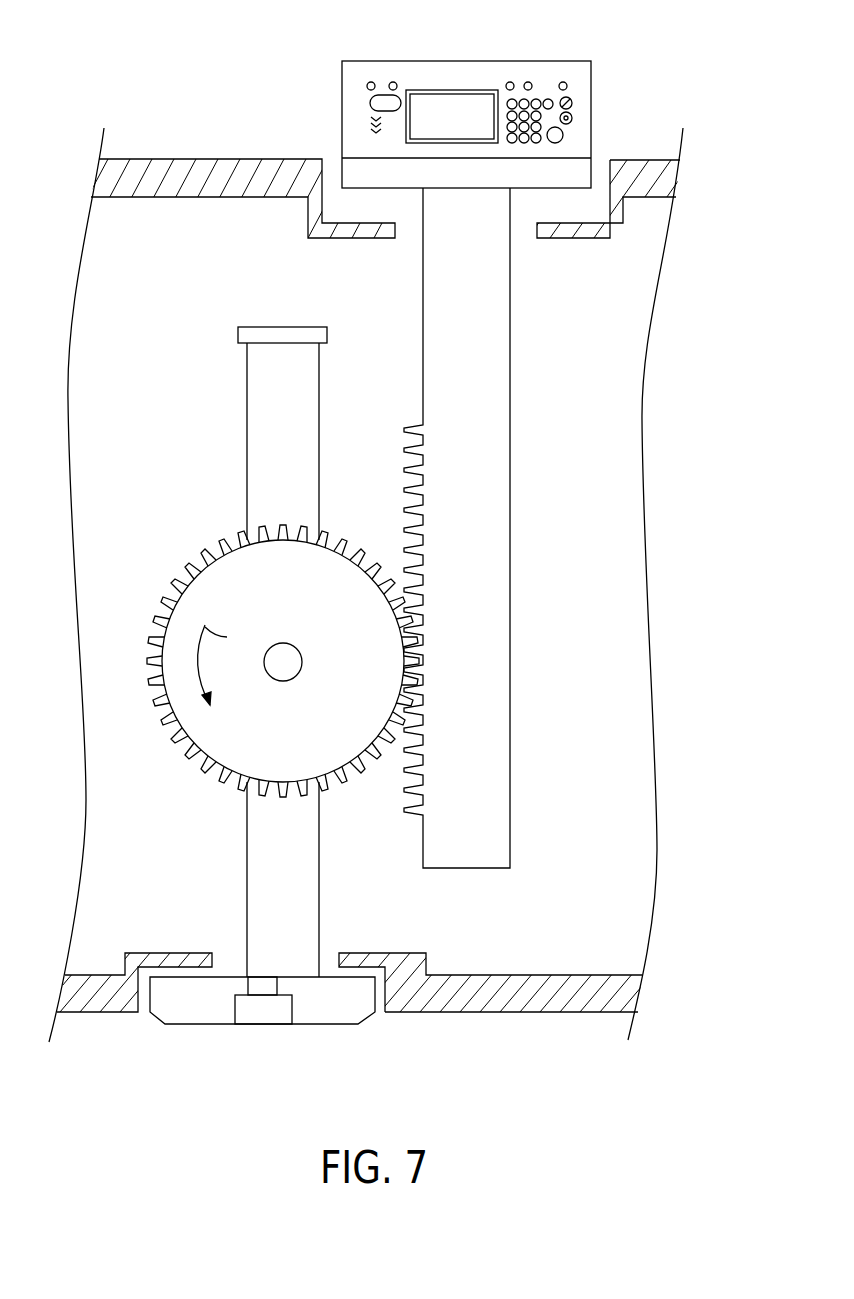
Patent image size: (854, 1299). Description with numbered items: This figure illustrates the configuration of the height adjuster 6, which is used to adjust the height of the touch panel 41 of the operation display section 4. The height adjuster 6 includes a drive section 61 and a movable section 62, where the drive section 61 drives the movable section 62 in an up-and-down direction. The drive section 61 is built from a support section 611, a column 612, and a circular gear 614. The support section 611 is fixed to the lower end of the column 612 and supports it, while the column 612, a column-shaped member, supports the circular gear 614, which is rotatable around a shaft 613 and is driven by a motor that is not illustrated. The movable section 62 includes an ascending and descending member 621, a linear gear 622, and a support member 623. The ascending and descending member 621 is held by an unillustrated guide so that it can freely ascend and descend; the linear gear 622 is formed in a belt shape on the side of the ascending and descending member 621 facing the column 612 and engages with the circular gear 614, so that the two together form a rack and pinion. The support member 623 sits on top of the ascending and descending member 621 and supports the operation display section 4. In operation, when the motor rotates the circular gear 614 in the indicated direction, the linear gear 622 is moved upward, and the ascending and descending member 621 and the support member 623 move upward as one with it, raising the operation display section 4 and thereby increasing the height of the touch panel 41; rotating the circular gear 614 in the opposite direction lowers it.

The operation display section 4 is at (505, 97).
The touch panel 41 is at (474, 100).
The height adjuster 6 is at (622, 296).
The drive section 61 is at (274, 691).
The movable section 62 is at (516, 528).
The support section 611 is at (197, 1017).
The column 612 is at (262, 436).
The shaft 613 is at (282, 643).
The circular gear 614 is at (217, 743).
The ascending and descending member 621 is at (490, 330).
The linear gear 622 is at (454, 620).
The support member 623 is at (565, 172).